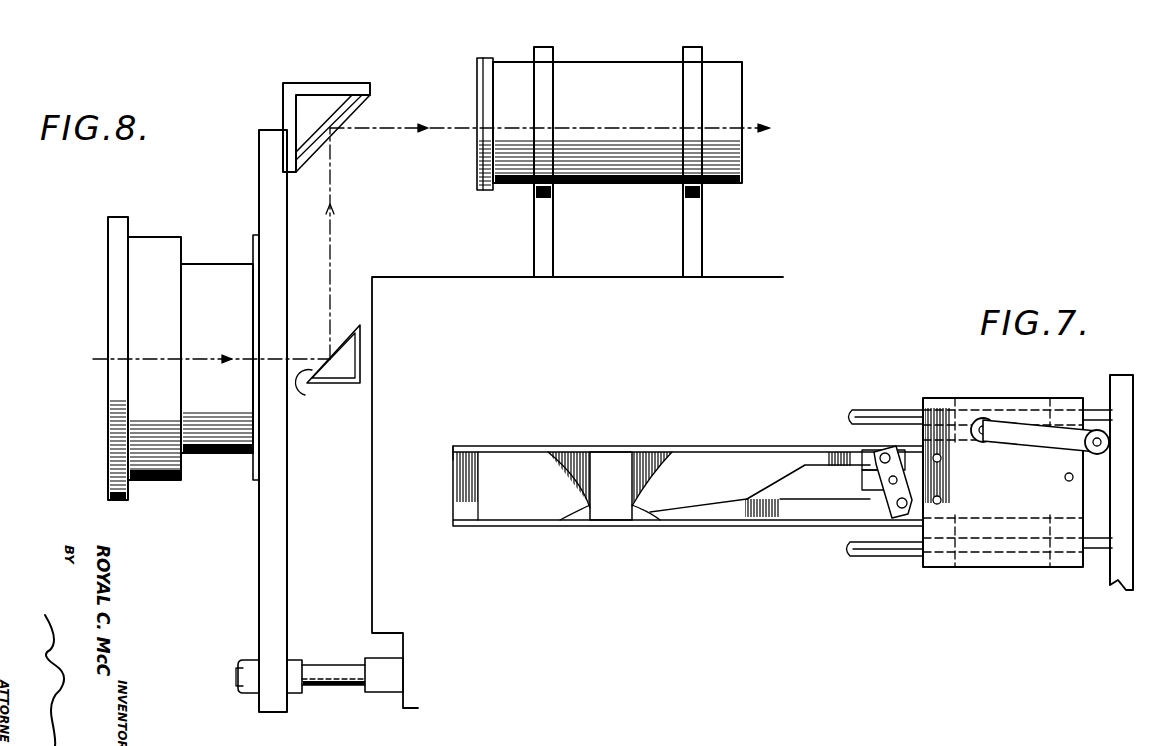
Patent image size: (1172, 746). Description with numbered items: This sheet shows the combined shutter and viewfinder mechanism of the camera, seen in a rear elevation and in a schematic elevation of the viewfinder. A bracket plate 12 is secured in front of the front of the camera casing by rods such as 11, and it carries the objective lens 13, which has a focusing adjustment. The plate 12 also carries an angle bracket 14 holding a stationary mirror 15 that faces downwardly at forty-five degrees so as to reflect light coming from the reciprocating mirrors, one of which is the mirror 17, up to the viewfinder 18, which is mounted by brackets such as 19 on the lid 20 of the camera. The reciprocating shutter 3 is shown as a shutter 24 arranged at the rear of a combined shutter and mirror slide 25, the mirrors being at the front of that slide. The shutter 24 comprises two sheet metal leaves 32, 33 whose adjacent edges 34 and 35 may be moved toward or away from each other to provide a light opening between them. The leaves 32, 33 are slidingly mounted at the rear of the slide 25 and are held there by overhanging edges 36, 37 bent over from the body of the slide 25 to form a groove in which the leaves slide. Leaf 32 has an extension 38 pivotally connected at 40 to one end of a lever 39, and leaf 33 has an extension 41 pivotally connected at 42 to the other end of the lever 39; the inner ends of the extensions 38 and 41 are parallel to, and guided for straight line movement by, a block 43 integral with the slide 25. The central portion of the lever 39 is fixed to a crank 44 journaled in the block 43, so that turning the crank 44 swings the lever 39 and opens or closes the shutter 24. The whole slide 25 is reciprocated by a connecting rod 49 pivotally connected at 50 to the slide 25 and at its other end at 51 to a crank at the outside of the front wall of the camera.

In FIG. 7, the reciprocating shutter 3 is at (530, 462).
In FIG. 8, the rods 11 is at (347, 691).
In FIG. 8, the bracket plate 12 is at (275, 531).
In FIG. 8, the objective lens 13 is at (118, 311).
In FIG. 8, the angle bracket 14 is at (283, 98).
In FIG. 8, the stationary mirror 15 is at (372, 108).
In FIG. 8, the reciprocating mirror 17 is at (328, 370).
In FIG. 8, the viewfinder 18 is at (600, 62).
In FIG. 8, the brackets 19 is at (696, 220).
In FIG. 8, the lid 20 is at (585, 277).
In FIG. 7, the shutter 24 is at (574, 450).
In FIG. 7, the combined shutter and mirror slide 25 is at (466, 506).
In FIG. 7, the leaf 32 is at (494, 456).
In FIG. 7, the leaf 33 is at (654, 454).
In FIG. 7, the adjacent edge 34 is at (590, 512).
In FIG. 7, the adjacent edge 35 is at (636, 514).
In FIG. 7, the overhanging edge 36 is at (468, 446).
In FIG. 7, the overhanging edge 37 is at (470, 527).
In FIG. 7, the extension 38 is at (780, 515).
In FIG. 7, the lever 39 is at (898, 508).
In FIG. 7, the pivotal connection 40 is at (906, 510).
In FIG. 7, the extension 41 is at (718, 460).
In FIG. 7, the pivotal connection 42 is at (886, 452).
In FIG. 7, the block 43 is at (868, 470).
In FIG. 7, the crank 44 is at (876, 496).
In FIG. 7, the connecting rod 49 is at (1015, 432).
In FIG. 7, the pivotal connection 50 is at (984, 418).
In FIG. 7, the pivotal connection 51 is at (1098, 440).